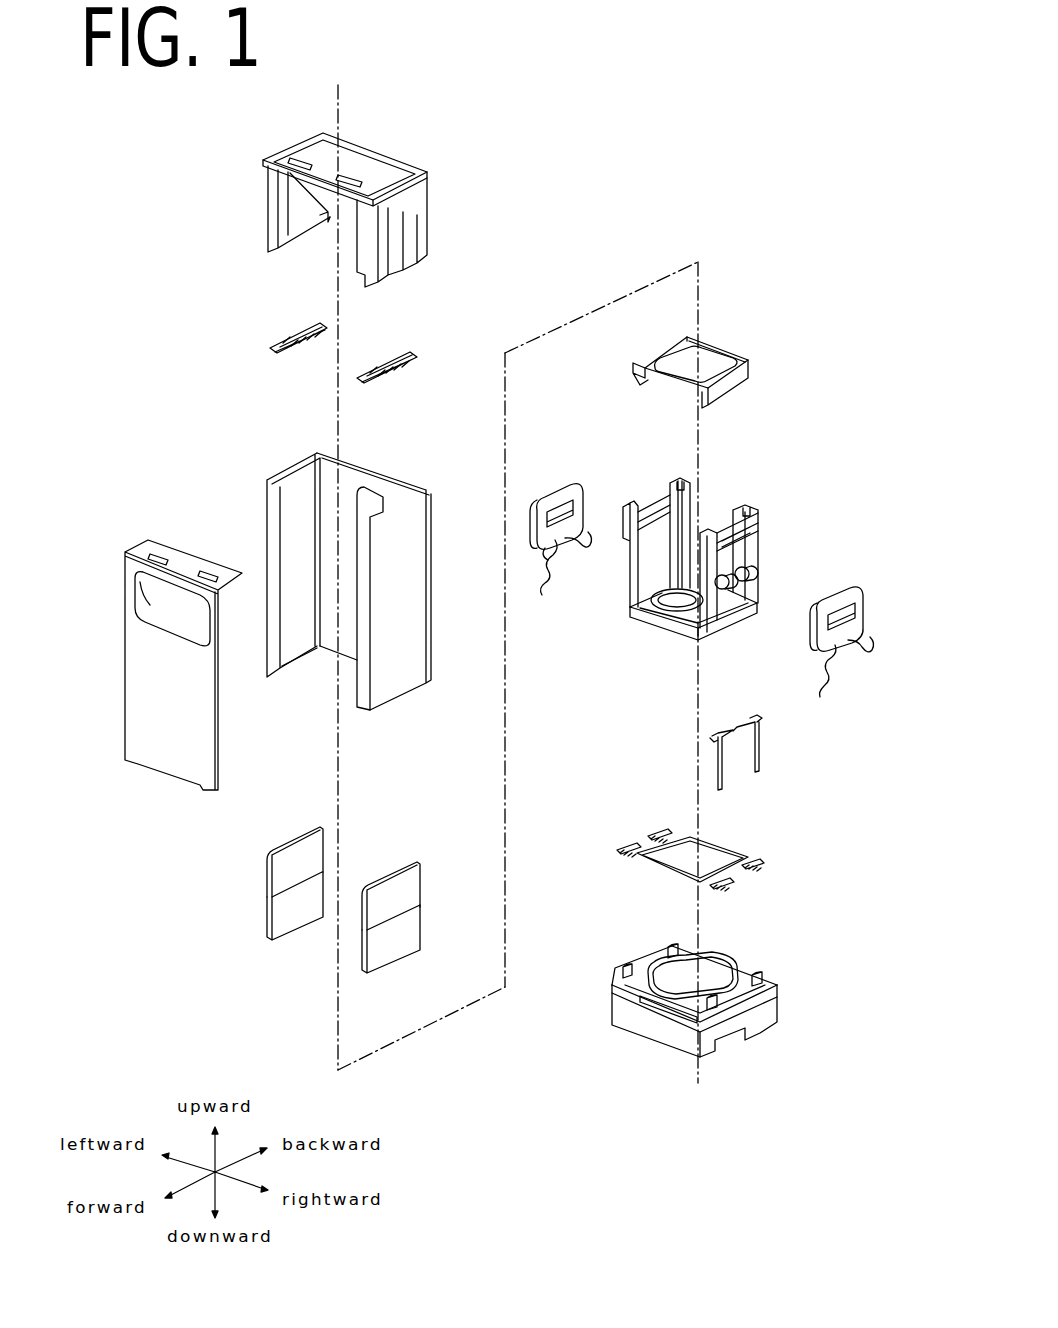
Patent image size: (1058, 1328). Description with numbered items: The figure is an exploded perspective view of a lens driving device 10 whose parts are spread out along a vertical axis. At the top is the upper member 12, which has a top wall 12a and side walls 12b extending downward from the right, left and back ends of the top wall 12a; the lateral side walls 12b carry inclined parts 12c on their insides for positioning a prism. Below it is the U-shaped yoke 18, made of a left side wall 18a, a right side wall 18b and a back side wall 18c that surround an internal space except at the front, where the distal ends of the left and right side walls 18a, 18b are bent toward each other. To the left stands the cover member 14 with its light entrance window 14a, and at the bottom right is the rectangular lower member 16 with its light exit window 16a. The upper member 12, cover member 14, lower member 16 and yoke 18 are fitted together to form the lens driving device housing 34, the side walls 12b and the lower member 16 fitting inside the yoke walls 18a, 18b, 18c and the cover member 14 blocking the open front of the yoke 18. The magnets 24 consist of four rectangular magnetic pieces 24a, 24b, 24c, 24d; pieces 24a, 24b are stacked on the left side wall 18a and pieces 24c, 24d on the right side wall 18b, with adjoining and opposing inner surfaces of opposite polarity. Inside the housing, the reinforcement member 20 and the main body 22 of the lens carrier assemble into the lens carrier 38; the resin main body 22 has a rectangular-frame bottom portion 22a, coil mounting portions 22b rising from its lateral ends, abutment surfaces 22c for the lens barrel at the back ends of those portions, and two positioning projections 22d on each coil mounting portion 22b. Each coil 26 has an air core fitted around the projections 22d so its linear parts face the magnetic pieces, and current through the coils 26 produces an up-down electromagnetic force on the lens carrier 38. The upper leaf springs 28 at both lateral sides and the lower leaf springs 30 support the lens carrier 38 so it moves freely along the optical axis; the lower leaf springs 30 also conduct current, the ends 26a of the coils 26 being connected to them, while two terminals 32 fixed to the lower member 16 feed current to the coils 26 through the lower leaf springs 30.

The lens driving device 10 is at (655, 197).
The upper member 12 is at (409, 157).
The top wall 12a is at (383, 162).
The side walls 12b is at (268, 195).
The inclined parts 12c is at (312, 210).
The cover member 14 is at (181, 546).
The light entrance window 14a is at (150, 606).
The lower member 16 is at (774, 982).
The light exit window 16a is at (680, 986).
The yoke 18 is at (379, 469).
The left side wall 18a is at (303, 485).
The right side wall 18b is at (420, 560).
The back side wall 18c is at (330, 641).
The reinforcement member 20 is at (718, 358).
The main body of the lens carrier 22 is at (759, 549).
The bottom portion 22a is at (661, 625).
The coil mounting portions 22b is at (640, 577).
The abutment surfaces for the lens barrel 22c is at (688, 540).
The positioning projections 22d is at (747, 578).
The magnets 24 is at (287, 845).
The magnetic piece 24a is at (270, 878).
The magnetic piece 24b is at (270, 918).
The magnetic piece 24c is at (410, 890).
The magnetic piece 24d is at (410, 932).
The coils 26 is at (546, 484).
The ends of the coils 26a is at (588, 546).
The upper leaf springs 28 is at (307, 346).
The lower leaf springs 30 is at (687, 835).
The terminals 32 is at (723, 776).
The lens driving device housing 34 is at (441, 207).
The lens carrier 38 is at (759, 471).